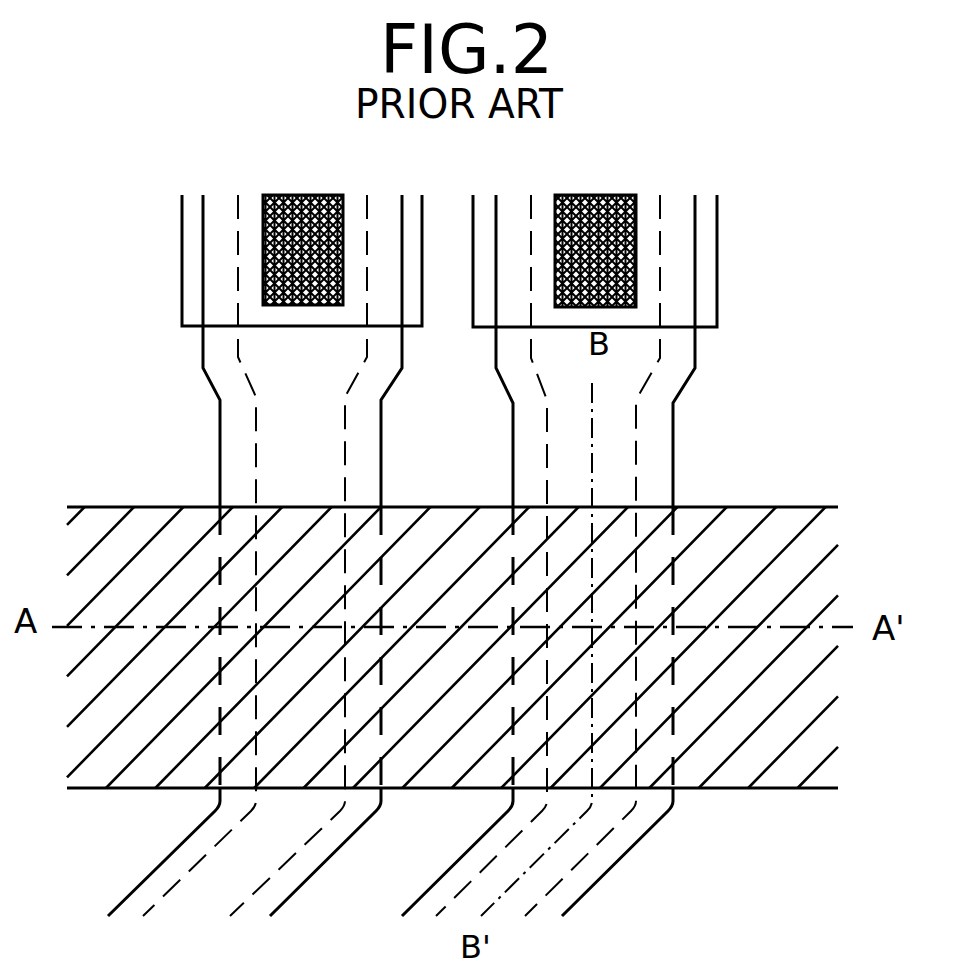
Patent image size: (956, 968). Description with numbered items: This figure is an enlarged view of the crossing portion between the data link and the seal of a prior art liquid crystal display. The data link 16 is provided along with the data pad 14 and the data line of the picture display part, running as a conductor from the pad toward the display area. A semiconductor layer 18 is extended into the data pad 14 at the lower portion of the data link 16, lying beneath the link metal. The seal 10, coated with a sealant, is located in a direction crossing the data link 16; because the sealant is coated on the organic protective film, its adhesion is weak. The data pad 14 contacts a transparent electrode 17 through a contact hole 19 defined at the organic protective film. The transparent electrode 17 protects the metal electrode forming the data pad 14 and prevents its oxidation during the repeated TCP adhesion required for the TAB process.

The seal 10 is at (153, 599).
The data pad 14 is at (685, 240).
The data link 16 is at (660, 443).
The transparent electrode 17 is at (192, 277).
The semiconductor layer 18 is at (623, 481).
The contact hole 19 is at (267, 202).